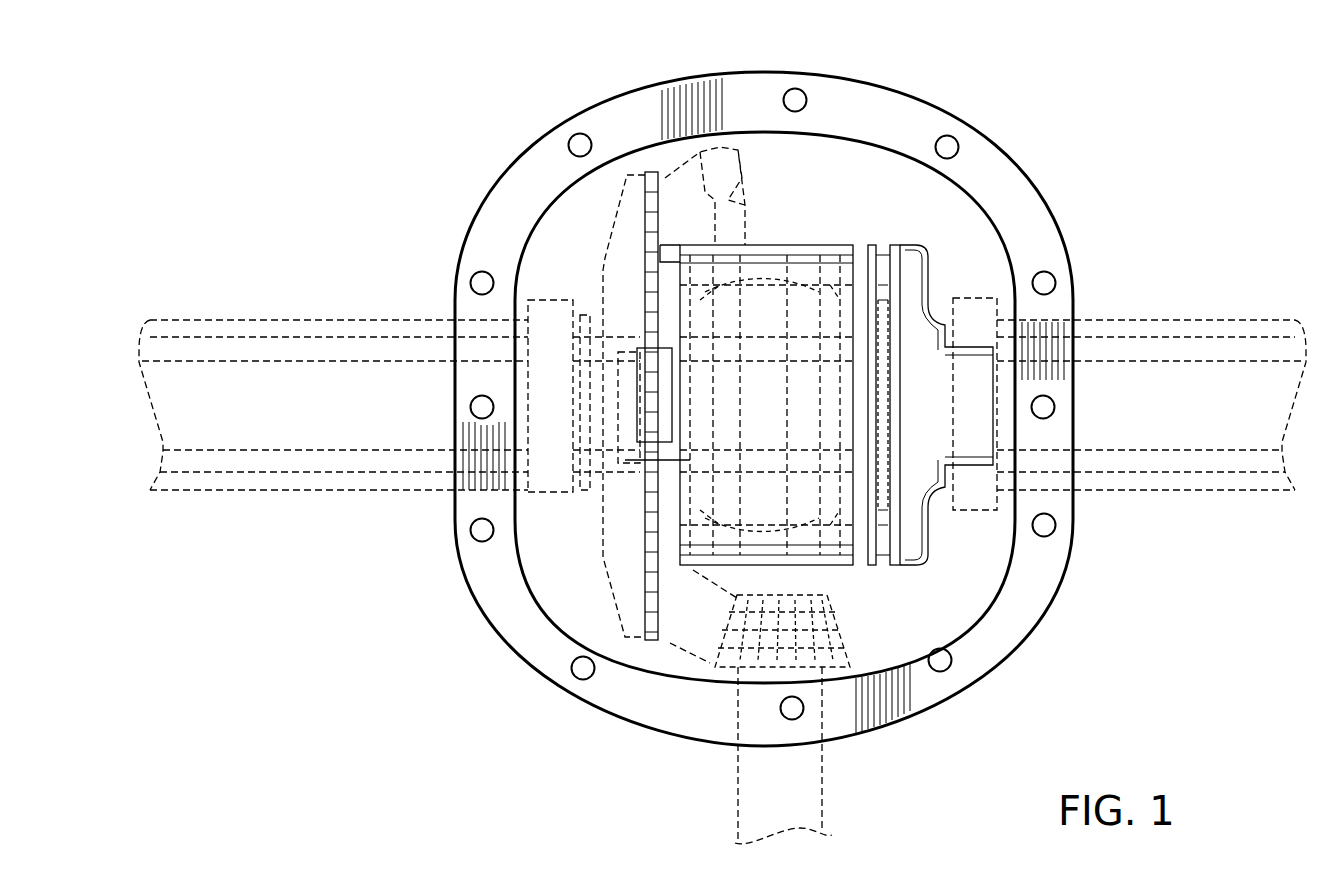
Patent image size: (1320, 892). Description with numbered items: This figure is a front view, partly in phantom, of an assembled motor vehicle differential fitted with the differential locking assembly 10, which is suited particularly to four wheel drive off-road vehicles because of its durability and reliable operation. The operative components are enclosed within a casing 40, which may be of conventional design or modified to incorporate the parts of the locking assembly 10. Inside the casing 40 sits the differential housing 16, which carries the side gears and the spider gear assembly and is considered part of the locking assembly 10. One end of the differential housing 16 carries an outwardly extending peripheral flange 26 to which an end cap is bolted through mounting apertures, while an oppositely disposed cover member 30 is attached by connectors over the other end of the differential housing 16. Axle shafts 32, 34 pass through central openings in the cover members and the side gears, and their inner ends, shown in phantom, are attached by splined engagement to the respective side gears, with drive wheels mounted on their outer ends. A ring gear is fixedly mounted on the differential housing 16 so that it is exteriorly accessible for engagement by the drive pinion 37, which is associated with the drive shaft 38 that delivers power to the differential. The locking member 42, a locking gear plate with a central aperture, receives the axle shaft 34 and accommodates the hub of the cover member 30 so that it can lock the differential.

The differential locking assembly 10 is at (847, 434).
The differential housing 16 is at (770, 245).
The peripheral flange 26 is at (588, 256).
The cover member 30 is at (940, 275).
The axle shaft 32 is at (277, 295).
The axle shaft 34 is at (1174, 293).
The drive pinion 37 is at (850, 617).
The drive shaft 38 is at (840, 790).
The casing 40 is at (937, 88).
The locking member 42 is at (895, 230).